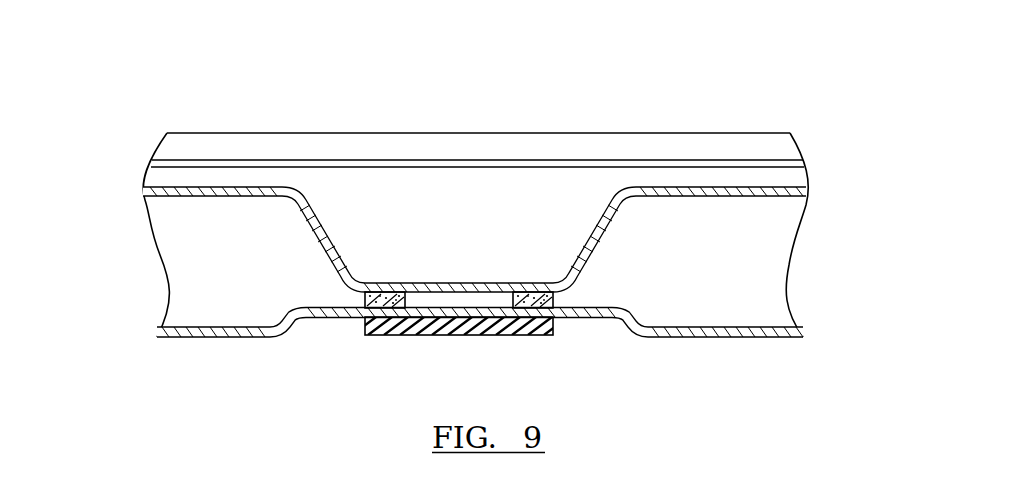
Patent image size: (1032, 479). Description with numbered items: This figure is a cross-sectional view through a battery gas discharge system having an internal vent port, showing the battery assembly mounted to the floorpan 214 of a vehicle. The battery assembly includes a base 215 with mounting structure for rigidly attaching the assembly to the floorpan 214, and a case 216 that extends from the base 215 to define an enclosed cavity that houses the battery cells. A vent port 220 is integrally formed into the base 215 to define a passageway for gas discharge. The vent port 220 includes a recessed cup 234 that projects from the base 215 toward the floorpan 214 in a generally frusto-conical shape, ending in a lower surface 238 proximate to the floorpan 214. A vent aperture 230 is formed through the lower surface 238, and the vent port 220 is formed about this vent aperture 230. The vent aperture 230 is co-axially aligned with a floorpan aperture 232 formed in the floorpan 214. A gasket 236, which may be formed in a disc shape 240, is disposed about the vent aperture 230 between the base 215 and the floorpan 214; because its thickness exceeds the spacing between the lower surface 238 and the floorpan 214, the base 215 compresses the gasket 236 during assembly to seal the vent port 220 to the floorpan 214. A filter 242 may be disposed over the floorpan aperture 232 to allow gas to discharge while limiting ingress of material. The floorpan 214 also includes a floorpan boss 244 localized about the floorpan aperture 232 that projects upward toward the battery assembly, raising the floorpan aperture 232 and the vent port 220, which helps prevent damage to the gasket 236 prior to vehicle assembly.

The floorpan 214 is at (767, 337).
The base 215 is at (137, 189).
The case 216 is at (309, 270).
The vent port 220 is at (309, 227).
The vent aperture 230 is at (423, 283).
The floorpan aperture 232 is at (504, 316).
The recessed cup 234 is at (407, 187).
The gasket 236 is at (352, 309).
The lower surface 238 is at (393, 283).
The disc shape 240 is at (397, 320).
The filter 242 is at (533, 327).
The floorpan boss 244 is at (598, 318).